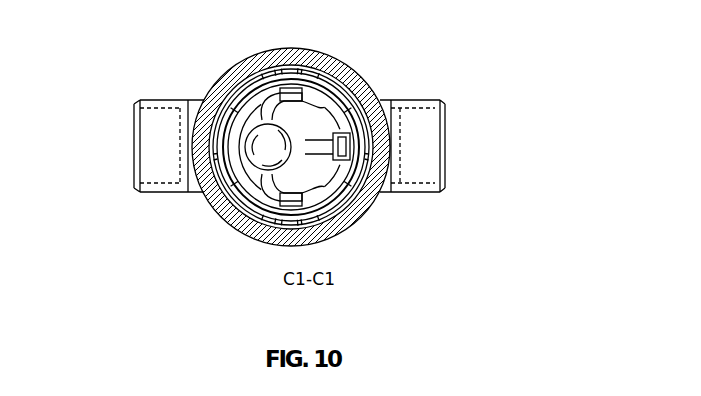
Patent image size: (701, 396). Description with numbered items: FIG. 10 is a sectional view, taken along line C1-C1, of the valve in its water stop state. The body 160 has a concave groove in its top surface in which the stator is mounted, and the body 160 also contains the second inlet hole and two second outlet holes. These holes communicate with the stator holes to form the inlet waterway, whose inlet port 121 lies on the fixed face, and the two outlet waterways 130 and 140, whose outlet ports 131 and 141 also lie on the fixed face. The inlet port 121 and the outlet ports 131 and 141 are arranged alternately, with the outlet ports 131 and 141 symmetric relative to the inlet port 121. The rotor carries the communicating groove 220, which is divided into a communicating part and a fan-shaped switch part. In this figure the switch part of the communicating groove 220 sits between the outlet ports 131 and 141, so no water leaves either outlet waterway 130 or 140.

The body 160 is at (247, 57).
The outlet port 131 is at (353, 205).
The inlet port 121 is at (258, 118).
The outlet port 141 is at (318, 112).
The communicating groove 220 is at (262, 165).
The outlet waterway 130 is at (157, 143).
The outlet waterway 140 is at (428, 140).